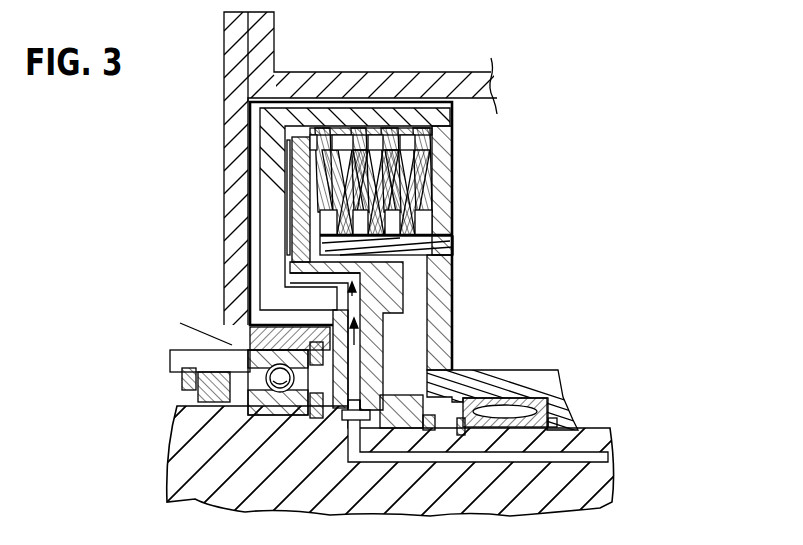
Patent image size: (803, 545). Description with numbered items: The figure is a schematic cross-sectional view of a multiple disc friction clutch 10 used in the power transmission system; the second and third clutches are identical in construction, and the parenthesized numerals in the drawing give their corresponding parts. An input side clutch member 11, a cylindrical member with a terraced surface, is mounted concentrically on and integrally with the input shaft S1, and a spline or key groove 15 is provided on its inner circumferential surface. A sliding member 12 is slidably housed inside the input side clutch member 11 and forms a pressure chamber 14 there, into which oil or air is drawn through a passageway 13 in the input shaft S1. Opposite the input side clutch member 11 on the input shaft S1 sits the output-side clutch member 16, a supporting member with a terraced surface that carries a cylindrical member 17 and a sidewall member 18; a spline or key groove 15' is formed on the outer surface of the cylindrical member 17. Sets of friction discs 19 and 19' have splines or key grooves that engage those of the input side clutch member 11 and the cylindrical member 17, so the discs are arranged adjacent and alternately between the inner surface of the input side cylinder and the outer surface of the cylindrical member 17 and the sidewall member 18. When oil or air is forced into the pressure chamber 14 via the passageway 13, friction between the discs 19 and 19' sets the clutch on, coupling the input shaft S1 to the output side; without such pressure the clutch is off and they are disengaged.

The multiple disc friction clutch 10 is at (222, 146).
The input side clutch member 11 is at (275, 117).
The sliding member 12 is at (302, 183).
The passageway 13 is at (606, 455).
The pressure chamber 14 is at (290, 256).
The spline or key groove 15 is at (424, 109).
The spline or key groove 15' is at (480, 245).
The output-side clutch member 16 is at (453, 305).
The cylindrical member 17 is at (425, 257).
The sidewall member 18 is at (453, 191).
The friction discs 19 is at (474, 144).
The friction discs 19' is at (480, 217).
The input shaft S1 is at (197, 425).